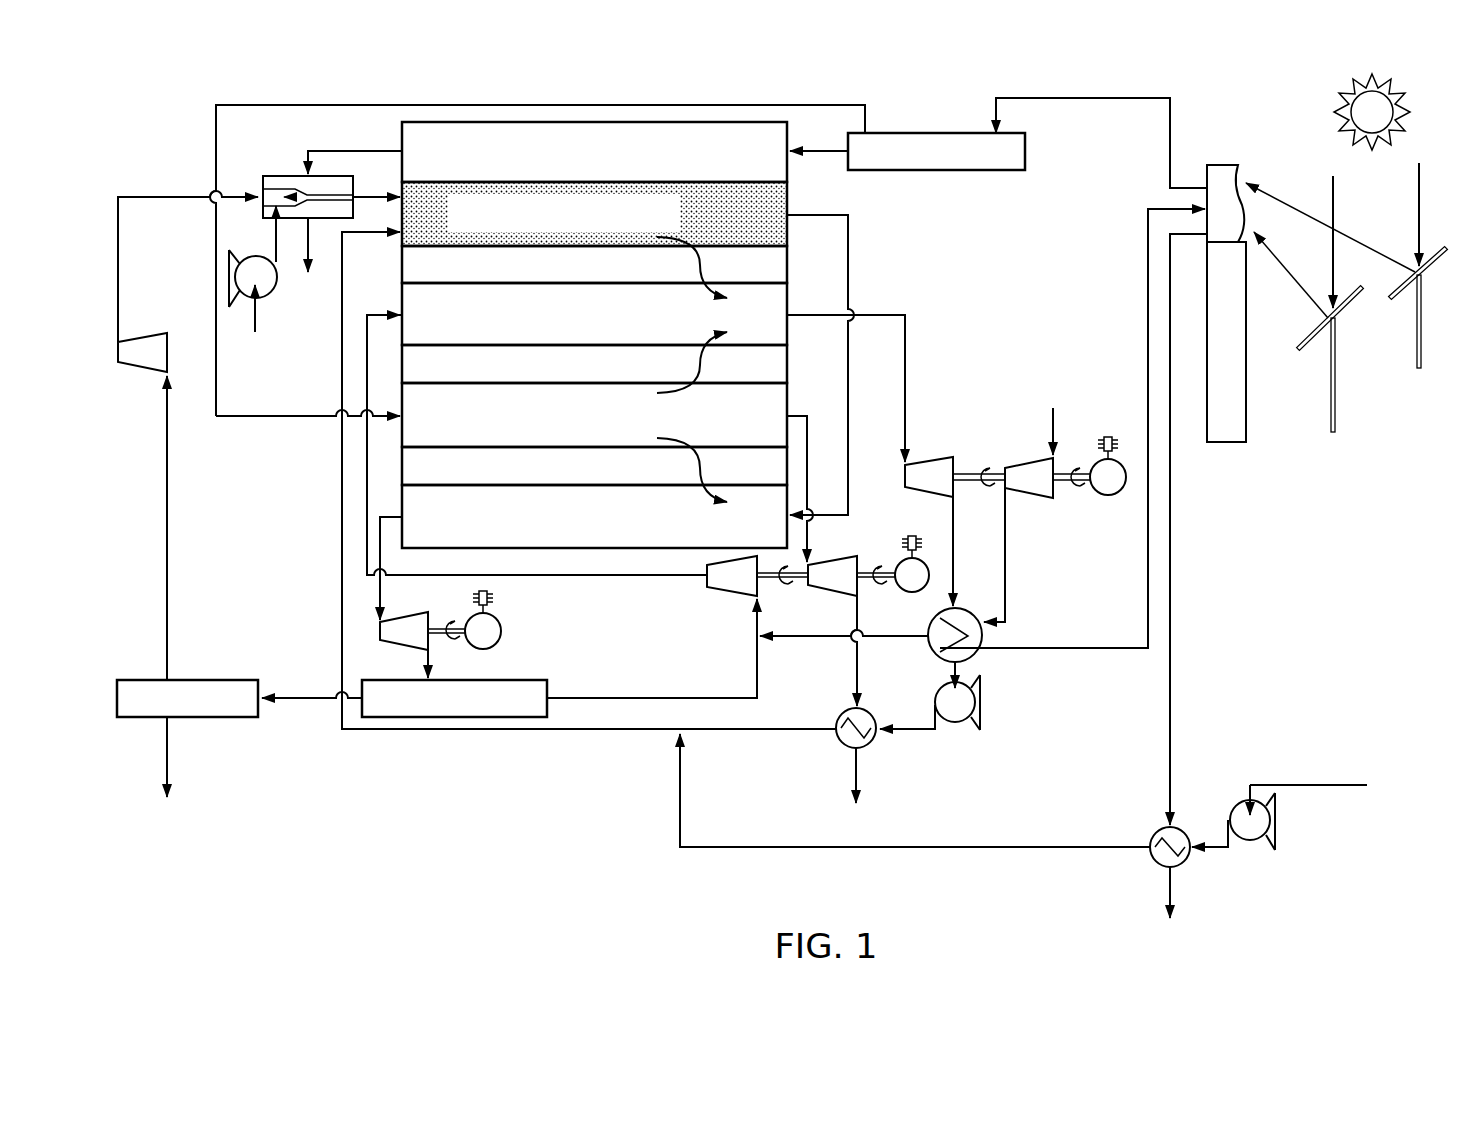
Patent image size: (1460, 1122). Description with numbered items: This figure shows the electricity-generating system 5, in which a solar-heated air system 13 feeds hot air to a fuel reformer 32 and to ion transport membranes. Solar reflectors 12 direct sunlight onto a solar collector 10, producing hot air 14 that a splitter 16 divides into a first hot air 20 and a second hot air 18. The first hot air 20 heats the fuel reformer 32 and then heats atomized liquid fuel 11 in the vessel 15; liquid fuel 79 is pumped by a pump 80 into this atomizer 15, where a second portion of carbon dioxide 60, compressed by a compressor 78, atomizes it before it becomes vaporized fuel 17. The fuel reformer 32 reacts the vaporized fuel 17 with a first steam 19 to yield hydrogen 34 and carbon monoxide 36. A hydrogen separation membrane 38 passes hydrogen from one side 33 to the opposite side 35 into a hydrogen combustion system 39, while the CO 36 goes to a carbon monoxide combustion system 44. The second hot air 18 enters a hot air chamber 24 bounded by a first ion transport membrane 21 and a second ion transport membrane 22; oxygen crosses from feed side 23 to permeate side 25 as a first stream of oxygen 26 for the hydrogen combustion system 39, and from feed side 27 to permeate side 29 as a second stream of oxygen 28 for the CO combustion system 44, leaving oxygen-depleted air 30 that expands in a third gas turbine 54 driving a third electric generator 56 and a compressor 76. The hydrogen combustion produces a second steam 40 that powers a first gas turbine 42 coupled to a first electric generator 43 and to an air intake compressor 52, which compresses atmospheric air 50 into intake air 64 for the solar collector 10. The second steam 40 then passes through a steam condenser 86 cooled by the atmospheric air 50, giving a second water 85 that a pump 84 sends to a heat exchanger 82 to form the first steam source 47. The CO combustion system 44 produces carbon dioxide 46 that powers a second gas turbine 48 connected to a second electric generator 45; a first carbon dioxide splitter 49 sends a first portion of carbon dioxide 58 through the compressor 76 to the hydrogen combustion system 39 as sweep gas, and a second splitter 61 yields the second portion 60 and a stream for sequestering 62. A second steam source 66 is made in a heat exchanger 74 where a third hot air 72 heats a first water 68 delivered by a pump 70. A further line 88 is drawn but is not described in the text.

The system 5 is at (188, 102).
The solar collector 10 is at (1212, 165).
The atomized liquid fuel 11 is at (340, 186).
The solar reflectors 12 is at (1338, 418).
The solar-heated air system 13 is at (1252, 418).
The hot air 14 is at (1125, 100).
The fuel atomizer 15 is at (270, 182).
The splitter 16 is at (1010, 165).
The vaporized fuel 17 is at (378, 196).
The second hot air 18 is at (795, 104).
The first steam 19 is at (340, 516).
The first hot air 20 is at (452, 165).
The first ion transport membrane 21 is at (452, 378).
The second ion transport membrane 22 is at (452, 480).
The feed side 23 is at (725, 385).
The hot air chamber 24 is at (452, 425).
The permeate side 25 is at (658, 341).
The first stream of oxygen 26 is at (690, 365).
The feed side 27 is at (730, 447).
The second stream of oxygen 28 is at (690, 468).
The permeate side 29 is at (655, 487).
The oxygen-depleted air 30 is at (797, 414).
The fuel reformer 32 is at (480, 223).
The feed side of hydrogen separation membrane 33 is at (705, 245).
The hydrogen 34 is at (690, 263).
The permeate side of hydrogen separation membrane 35 is at (647, 283).
The carbon monoxide 36 is at (850, 235).
The hydrogen separation membrane 38 is at (437, 278).
The hydrogen combustion system 39 is at (438, 325).
The second steam 40 is at (895, 313).
The first gas turbine 42 is at (947, 452).
The first electric generator 43 is at (1105, 492).
The carbon monoxide combustion system 44 is at (452, 530).
The second electric generator 45 is at (490, 630).
The carbon dioxide 46 is at (378, 595).
The first steam source 47 is at (735, 731).
The second gas turbine 48 is at (378, 632).
The first carbon dioxide splitter 49 is at (393, 711).
The atmospheric air 50 is at (1056, 418).
The air intake compressor 52 is at (1045, 500).
The third gas turbine 54 is at (850, 557).
The third electric generator 56 is at (925, 565).
The first portion of carbon dioxide 58 is at (610, 577).
The second portion of carbon dioxide 60 is at (165, 497).
The second splitter 61 is at (148, 711).
The carbon dioxide for sequestering 62 is at (165, 756).
The intake air 64 is at (1127, 648).
The second steam source 66 is at (740, 849).
The first water 68 is at (1335, 785).
The pump 70 is at (1238, 818).
The third hot air 72 is at (1172, 706).
The heat exchanger 74 is at (1155, 832).
The compressor 76 is at (730, 598).
The compressor 78 is at (125, 367).
The liquid fuel 79 is at (258, 322).
The pump 80 is at (242, 283).
The heat exchanger 82 is at (843, 748).
The pump 84 is at (955, 720).
The second water 85 is at (962, 675).
The steam condenser 86 is at (985, 634).
The line to compressor 76 88 is at (822, 639).